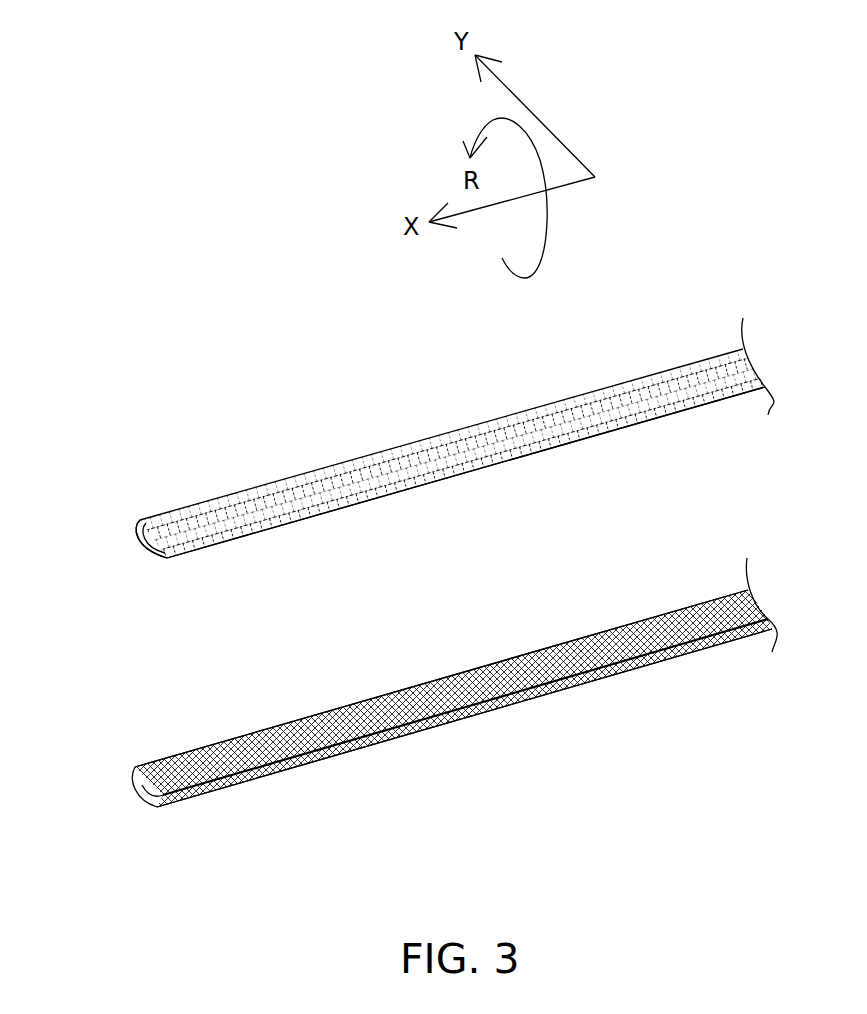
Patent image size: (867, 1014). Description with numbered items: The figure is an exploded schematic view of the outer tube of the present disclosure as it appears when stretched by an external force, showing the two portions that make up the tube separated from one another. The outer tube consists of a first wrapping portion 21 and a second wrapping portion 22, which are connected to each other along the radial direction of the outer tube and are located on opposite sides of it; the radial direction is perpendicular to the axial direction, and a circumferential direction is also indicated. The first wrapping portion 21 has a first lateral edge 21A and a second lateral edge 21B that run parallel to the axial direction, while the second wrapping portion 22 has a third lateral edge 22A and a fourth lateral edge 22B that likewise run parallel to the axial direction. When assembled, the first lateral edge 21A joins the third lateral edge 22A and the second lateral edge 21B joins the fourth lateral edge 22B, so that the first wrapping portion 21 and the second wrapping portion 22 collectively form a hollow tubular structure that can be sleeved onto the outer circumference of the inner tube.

The first wrapping portion 21 is at (311, 424).
The first lateral edge 21A is at (138, 537).
The second lateral edge 21B is at (413, 488).
The second wrapping portion 22 is at (690, 560).
The third lateral edge 22A is at (420, 675).
The fourth lateral edge 22B is at (563, 690).